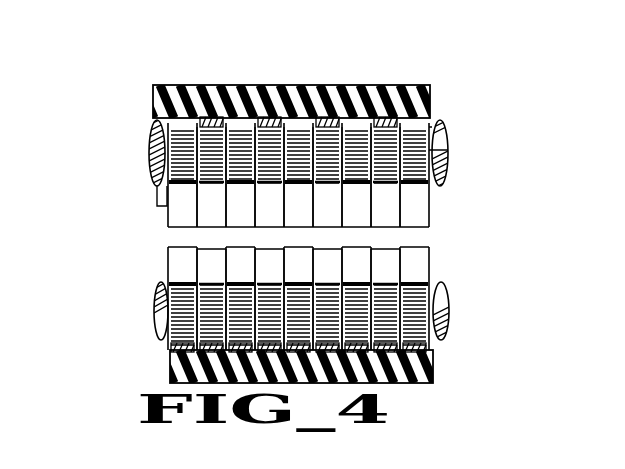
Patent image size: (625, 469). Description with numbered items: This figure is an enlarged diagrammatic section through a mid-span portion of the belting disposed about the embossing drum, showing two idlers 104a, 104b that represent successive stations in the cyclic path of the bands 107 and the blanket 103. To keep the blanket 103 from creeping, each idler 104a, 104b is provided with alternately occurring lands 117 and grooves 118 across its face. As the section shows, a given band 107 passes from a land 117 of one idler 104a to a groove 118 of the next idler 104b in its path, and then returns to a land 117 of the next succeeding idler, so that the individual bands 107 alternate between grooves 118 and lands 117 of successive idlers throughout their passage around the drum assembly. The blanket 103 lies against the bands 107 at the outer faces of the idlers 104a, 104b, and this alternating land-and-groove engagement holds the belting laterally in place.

The blanket 103 is at (402, 88).
The idler 104a is at (295, 130).
The idler 104b is at (437, 300).
The band 107 is at (157, 121).
The land 117 is at (160, 172).
The groove 118 is at (152, 154).